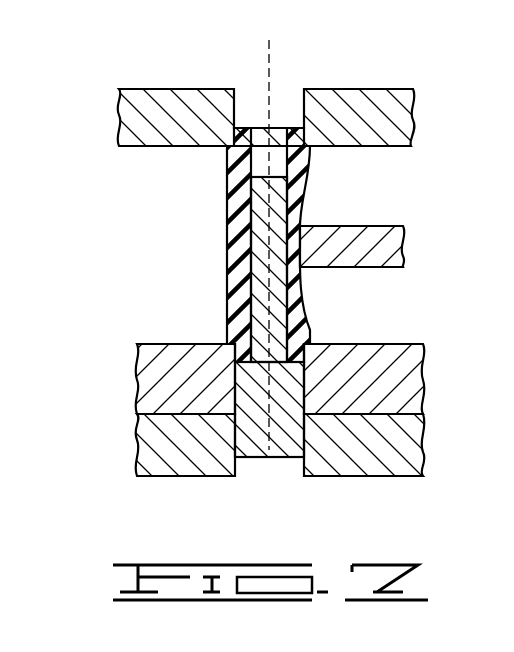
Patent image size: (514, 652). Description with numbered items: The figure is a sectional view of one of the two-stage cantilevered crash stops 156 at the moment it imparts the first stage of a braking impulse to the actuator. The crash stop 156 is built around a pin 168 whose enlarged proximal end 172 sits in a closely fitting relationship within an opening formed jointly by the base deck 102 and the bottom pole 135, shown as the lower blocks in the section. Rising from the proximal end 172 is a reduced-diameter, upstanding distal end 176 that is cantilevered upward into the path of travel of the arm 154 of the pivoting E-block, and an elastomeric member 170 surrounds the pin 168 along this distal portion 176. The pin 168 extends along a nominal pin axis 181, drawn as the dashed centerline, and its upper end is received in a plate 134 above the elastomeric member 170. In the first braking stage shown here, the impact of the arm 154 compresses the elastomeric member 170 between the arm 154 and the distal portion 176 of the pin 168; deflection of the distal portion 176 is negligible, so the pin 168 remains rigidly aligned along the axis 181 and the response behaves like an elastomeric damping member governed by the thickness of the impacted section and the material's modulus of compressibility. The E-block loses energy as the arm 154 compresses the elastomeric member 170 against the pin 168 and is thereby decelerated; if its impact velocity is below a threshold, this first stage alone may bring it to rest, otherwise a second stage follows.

The crash stop 156 is at (118, 66).
The top plate 134 is at (358, 89).
The nominal pin axis 181 is at (271, 68).
The elastomeric member 170 is at (235, 208).
The distal end 176 is at (268, 265).
The pin 168 is at (245, 300).
The arm 154 is at (348, 268).
The bottom pole 135 is at (412, 345).
The base deck 102 is at (405, 476).
The proximal end 172 is at (272, 456).